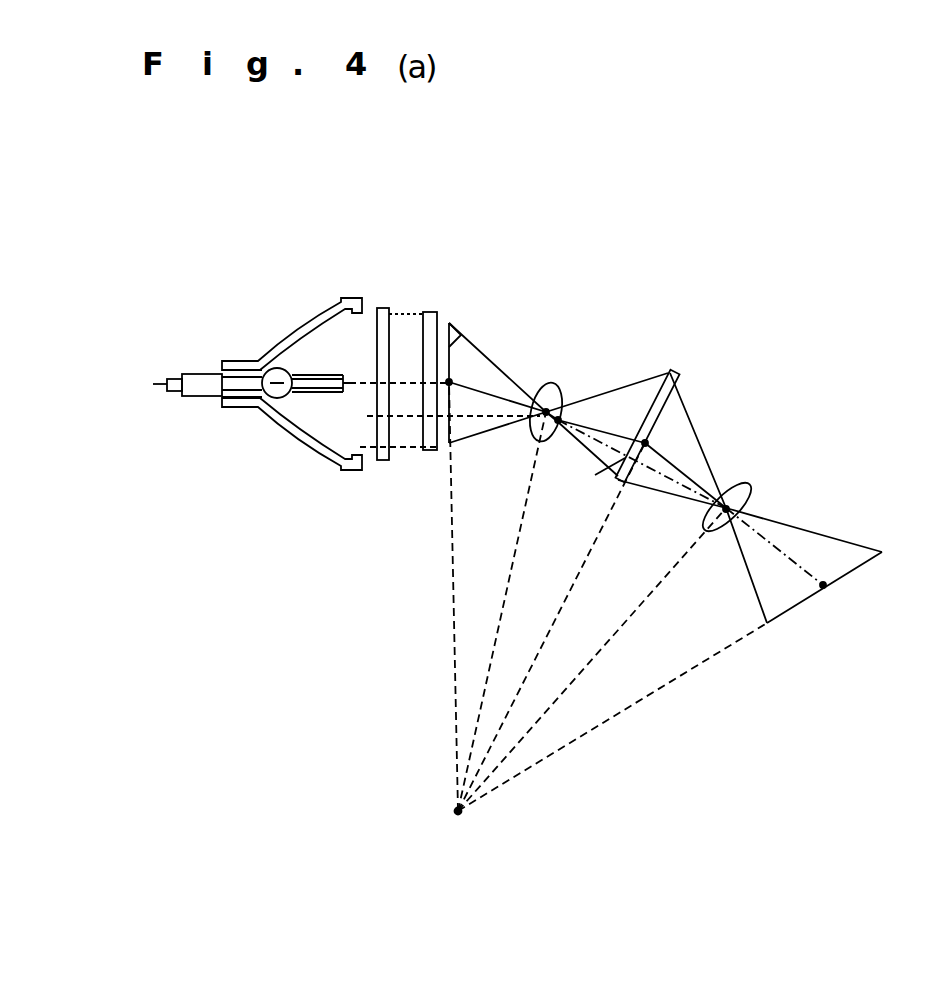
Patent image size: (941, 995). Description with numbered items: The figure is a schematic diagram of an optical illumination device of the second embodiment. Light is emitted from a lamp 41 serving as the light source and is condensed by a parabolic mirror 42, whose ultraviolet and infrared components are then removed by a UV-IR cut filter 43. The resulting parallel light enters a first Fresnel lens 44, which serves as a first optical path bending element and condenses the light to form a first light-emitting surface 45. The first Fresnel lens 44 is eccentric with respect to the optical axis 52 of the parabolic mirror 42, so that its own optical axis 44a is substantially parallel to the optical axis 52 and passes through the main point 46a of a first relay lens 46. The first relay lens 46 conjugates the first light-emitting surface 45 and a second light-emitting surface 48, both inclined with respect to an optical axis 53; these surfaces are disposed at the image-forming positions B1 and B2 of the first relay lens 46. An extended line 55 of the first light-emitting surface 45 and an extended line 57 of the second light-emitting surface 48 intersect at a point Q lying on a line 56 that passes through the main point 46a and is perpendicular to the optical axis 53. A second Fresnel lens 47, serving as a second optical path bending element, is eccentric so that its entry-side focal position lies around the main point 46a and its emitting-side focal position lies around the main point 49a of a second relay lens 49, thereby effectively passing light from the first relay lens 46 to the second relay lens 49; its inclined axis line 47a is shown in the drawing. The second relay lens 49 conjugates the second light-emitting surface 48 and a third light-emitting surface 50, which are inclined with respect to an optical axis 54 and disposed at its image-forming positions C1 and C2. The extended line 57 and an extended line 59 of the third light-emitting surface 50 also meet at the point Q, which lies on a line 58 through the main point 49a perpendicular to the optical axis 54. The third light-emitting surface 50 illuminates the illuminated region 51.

The lamp 41 is at (194, 374).
The parabolic mirror 42 is at (288, 322).
The UV-IR cut filter 43 is at (382, 307).
The first Fresnel lens 44 is at (432, 312).
The optical axis of the first Fresnel lens 44a is at (374, 418).
The first light-emitting surface 45 is at (460, 332).
The first relay lens 46 is at (548, 382).
The main point of the first relay lens 46a is at (560, 387).
The second Fresnel lens 47 is at (678, 370).
The plate axis line 47a is at (585, 448).
The second light-emitting surface 48 is at (683, 400).
The second relay lens 49 is at (748, 482).
The main point of the second relay lens 49a is at (752, 492).
The third light-emitting surface 50 is at (872, 540).
The illuminated region 51 is at (803, 603).
The optical axis of the parabolic mirror 52 is at (407, 405).
The optical axis 53 is at (480, 390).
The optical axis 54 is at (672, 468).
The extended line of the first light-emitting surface 55 is at (452, 553).
The line through the main point of the first relay lens 56 is at (517, 552).
The extended line of the second light-emitting surface 57 is at (583, 565).
The line through the main point of the second relay lens 58 is at (638, 607).
The extended line of the third light-emitting surface 59 is at (695, 666).
The image-forming position B1 is at (451, 384).
The image-forming position B2 is at (639, 462).
The image-forming position C1 is at (655, 442).
The image-forming position C2 is at (823, 582).
The point Q is at (459, 833).